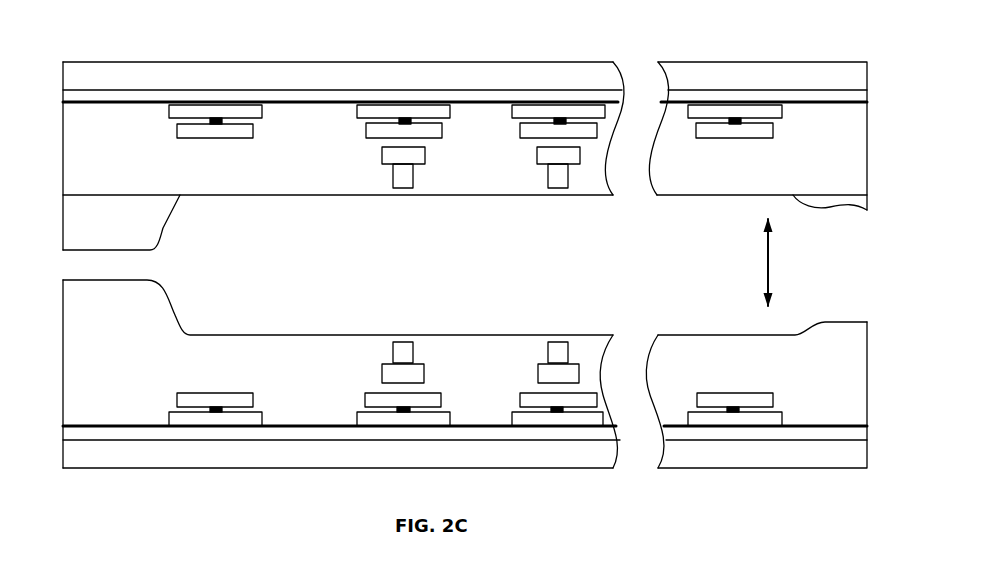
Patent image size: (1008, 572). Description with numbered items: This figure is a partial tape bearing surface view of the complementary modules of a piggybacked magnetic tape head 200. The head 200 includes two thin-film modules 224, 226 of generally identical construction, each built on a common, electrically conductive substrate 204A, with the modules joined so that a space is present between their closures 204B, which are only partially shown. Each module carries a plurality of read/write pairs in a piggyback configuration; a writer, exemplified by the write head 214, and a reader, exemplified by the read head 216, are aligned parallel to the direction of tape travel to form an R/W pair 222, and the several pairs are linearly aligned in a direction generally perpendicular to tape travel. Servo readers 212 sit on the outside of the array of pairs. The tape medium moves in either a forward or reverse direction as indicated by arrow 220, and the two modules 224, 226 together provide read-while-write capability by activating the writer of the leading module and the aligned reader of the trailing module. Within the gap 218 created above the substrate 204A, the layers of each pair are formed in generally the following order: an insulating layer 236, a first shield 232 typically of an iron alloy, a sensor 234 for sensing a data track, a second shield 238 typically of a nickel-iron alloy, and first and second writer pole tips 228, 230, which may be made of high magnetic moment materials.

The magnetic tape head 200 is at (397, 50).
The substrate 204A is at (195, 89).
The closure 204B is at (166, 227).
The servo readers 212 is at (255, 388).
The write head 214 is at (395, 340).
The read head 216 is at (387, 393).
The gap 218 is at (262, 195).
The arrow 220 is at (772, 268).
The R/W pair 222 is at (387, 345).
The thin-film module 224 is at (792, 62).
The thin-film module 226 is at (777, 468).
The first writer pole tip 228 is at (381, 375).
The second writer pole tip 230 is at (390, 362).
The first shield 232 is at (357, 418).
The sensor 234 is at (355, 405).
The electrically insulative layer 236 is at (857, 418).
The second shield 238 is at (365, 400).